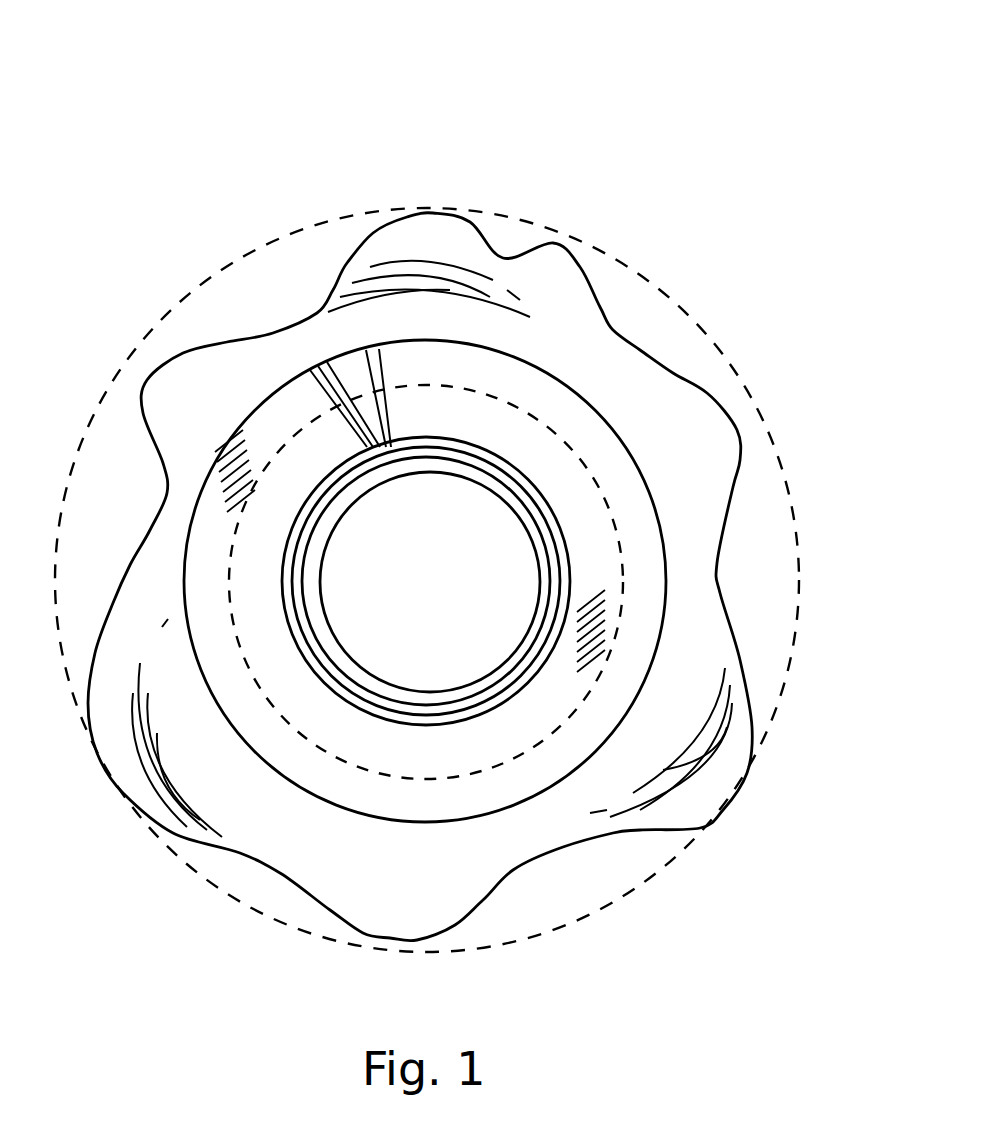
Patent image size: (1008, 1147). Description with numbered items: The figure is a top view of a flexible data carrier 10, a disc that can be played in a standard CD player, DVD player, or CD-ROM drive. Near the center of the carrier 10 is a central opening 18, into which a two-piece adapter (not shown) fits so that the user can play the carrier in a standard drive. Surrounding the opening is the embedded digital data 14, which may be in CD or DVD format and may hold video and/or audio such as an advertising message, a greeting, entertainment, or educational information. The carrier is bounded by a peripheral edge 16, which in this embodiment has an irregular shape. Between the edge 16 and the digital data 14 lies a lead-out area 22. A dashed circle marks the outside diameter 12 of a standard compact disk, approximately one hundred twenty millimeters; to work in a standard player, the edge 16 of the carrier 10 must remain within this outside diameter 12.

The flexible data carrier 10 is at (672, 128).
The outside diameter of a standard compact disk 12 is at (795, 500).
The digital data 14 is at (612, 582).
The peripheral edge 16 is at (227, 340).
The central opening 18 is at (489, 495).
The lead-out area 22 is at (404, 880).